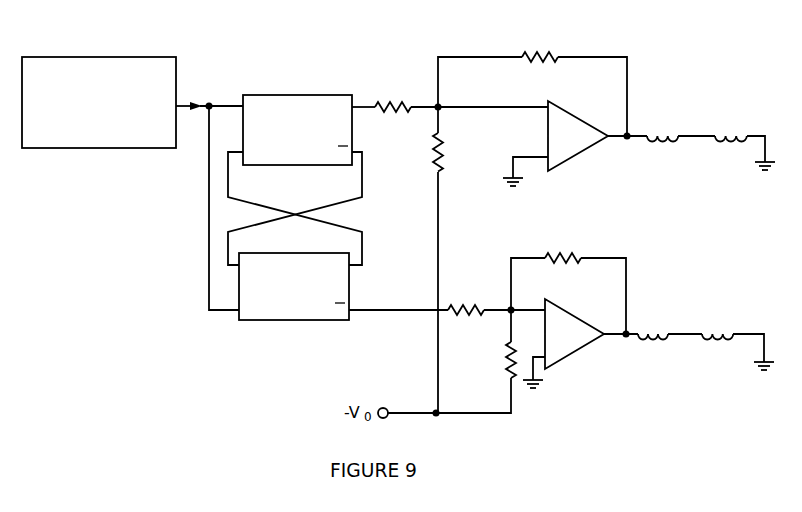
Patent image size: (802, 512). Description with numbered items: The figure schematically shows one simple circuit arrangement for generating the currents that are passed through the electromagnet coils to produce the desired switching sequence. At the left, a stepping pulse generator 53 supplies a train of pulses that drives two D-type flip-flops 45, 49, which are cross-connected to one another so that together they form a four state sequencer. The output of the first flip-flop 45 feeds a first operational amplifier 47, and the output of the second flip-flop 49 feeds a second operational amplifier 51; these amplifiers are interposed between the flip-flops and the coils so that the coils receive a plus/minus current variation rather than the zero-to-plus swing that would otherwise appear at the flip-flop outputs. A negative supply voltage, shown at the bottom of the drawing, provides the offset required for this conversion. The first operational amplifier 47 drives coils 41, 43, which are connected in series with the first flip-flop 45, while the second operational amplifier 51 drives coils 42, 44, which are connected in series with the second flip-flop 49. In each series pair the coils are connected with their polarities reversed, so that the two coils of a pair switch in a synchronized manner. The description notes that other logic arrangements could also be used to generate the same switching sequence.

The pulse generator 53 is at (153, 57).
The D-type flip-flop 45 is at (330, 95).
The D-type flip-flop 49 is at (330, 320).
The operational amplifier 47 is at (577, 114).
The operational amplifier 51 is at (575, 352).
The coil 41 is at (662, 134).
The coil 43 is at (733, 134).
The coil 42 is at (653, 332).
The coil 44 is at (720, 332).